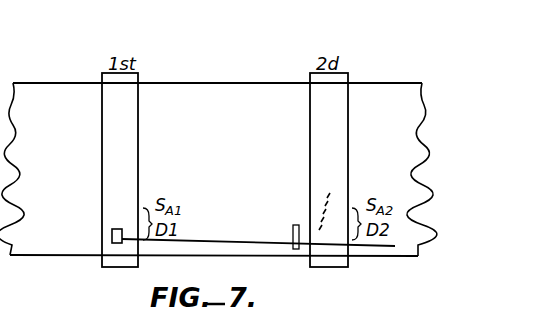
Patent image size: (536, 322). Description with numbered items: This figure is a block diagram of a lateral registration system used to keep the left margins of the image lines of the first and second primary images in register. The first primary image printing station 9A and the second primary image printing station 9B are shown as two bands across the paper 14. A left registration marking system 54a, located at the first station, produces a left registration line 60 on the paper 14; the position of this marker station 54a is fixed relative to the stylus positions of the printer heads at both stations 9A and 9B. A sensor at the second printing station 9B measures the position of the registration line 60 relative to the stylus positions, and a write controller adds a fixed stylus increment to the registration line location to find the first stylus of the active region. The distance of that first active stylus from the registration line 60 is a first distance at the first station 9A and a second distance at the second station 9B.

The paper 14 is at (213, 83).
The first primary image printing station 9A is at (139, 100).
The second primary image printing station 9B is at (349, 100).
The left registration line 60 is at (208, 240).
The left registration marking system 54a is at (114, 243).